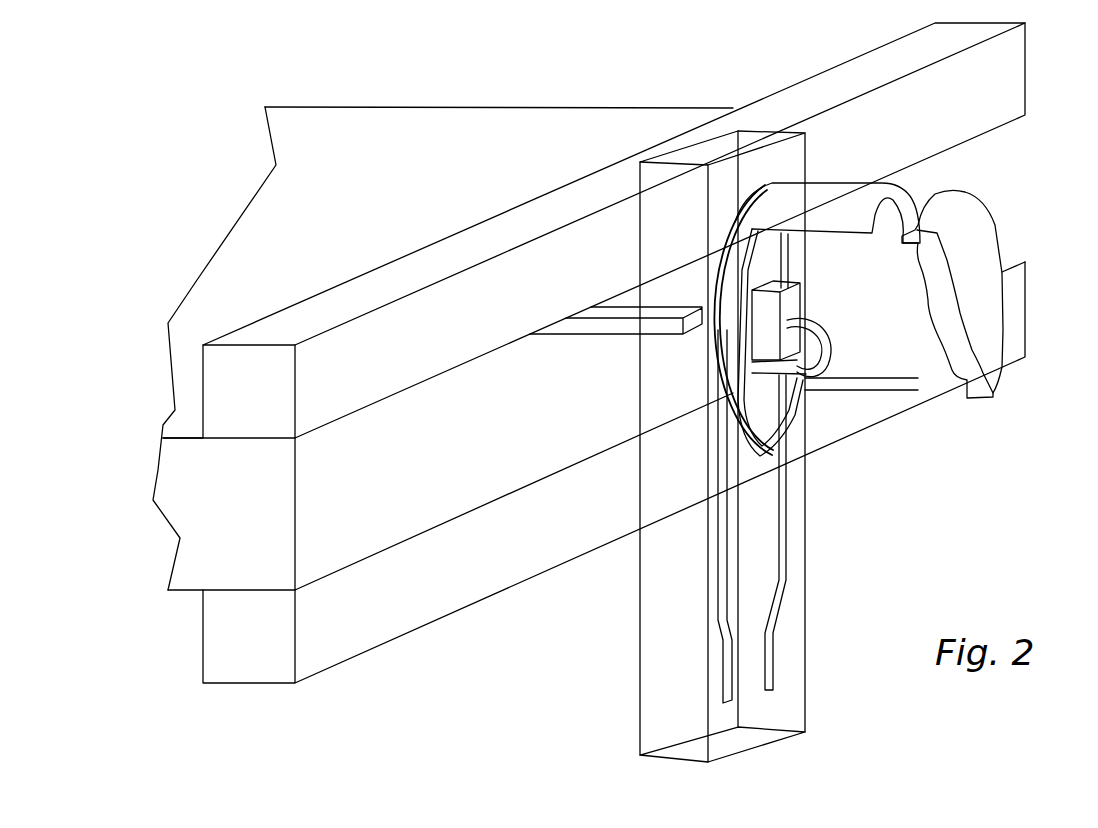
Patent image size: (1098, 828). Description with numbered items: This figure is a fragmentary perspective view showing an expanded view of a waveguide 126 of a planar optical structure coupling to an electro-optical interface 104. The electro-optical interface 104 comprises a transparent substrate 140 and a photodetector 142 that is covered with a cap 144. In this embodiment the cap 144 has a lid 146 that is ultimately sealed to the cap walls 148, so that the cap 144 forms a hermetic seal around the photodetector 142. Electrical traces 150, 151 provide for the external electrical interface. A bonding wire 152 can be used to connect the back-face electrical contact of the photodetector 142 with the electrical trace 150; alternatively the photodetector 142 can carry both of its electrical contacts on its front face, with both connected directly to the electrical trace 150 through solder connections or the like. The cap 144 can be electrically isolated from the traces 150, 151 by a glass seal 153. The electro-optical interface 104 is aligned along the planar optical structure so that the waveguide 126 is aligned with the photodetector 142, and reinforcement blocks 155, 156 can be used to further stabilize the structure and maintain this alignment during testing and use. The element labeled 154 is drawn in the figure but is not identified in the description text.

The electro-optical interface 104 is at (624, 606).
The waveguide 126 is at (612, 325).
The transparent substrate 140 is at (658, 700).
The photodetector 142 is at (795, 303).
The cap 144 is at (866, 197).
The lid 146 is at (977, 252).
The cap walls 148 is at (893, 360).
The electrical trace 150 is at (768, 658).
The electrical trace 151 is at (732, 694).
The bonding wire 152 is at (837, 380).
The glass seal 153 is at (748, 453).
The lower rail 154 is at (245, 513).
The reinforcement block 155 is at (453, 566).
The reinforcement block 156 is at (998, 86).